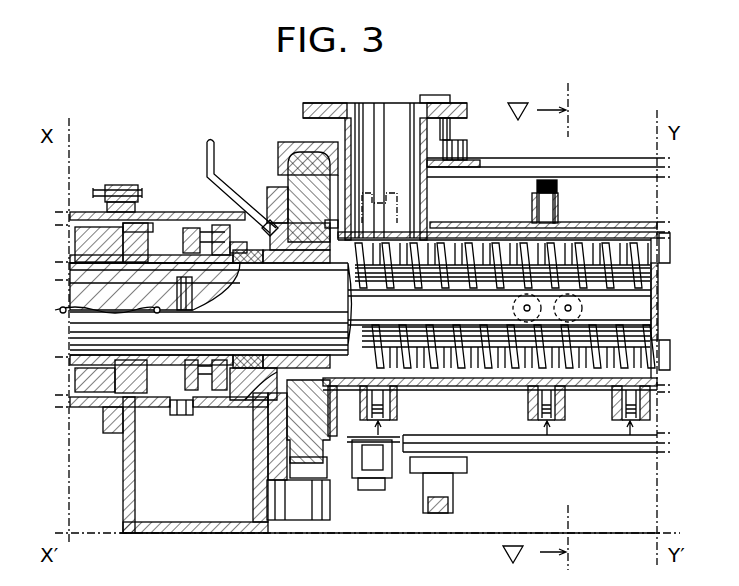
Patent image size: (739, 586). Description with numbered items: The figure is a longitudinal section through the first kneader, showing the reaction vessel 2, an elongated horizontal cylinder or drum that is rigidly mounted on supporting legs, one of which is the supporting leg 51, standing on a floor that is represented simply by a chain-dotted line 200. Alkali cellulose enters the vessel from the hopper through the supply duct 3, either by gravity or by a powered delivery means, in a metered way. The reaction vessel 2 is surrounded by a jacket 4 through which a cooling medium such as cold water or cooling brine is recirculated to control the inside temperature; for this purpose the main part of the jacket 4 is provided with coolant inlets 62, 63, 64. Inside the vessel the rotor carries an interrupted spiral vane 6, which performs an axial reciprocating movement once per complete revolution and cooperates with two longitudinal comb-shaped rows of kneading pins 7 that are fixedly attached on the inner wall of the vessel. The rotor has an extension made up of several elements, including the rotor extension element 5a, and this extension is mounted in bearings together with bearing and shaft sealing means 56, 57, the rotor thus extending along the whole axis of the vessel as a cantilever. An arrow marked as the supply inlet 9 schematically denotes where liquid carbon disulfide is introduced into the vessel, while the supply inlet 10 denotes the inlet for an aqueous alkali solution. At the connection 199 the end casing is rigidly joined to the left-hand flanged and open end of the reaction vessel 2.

The reaction vessel 2 is at (583, 233).
The supply duct 3 is at (398, 113).
The jacket 4 is at (517, 228).
The rotor extension element 5a is at (304, 303).
The interrupted spiral vane 6 is at (493, 363).
The kneading pins 7 is at (581, 368).
The supply inlet for liquid carbon disulfide 9 is at (582, 308).
The supply inlet for aqueous alkali solution 10 is at (513, 308).
The supporting leg 51 is at (125, 480).
The bearing and shaft sealing means 56 is at (75, 353).
The bearing and shaft sealing means 57 is at (255, 397).
The coolant inlet 62 is at (398, 403).
The coolant inlet 63 is at (532, 420).
The coolant inlet 64 is at (650, 420).
The connection of end casing to reaction vessel 199 is at (287, 142).
The floor 200 is at (383, 530).